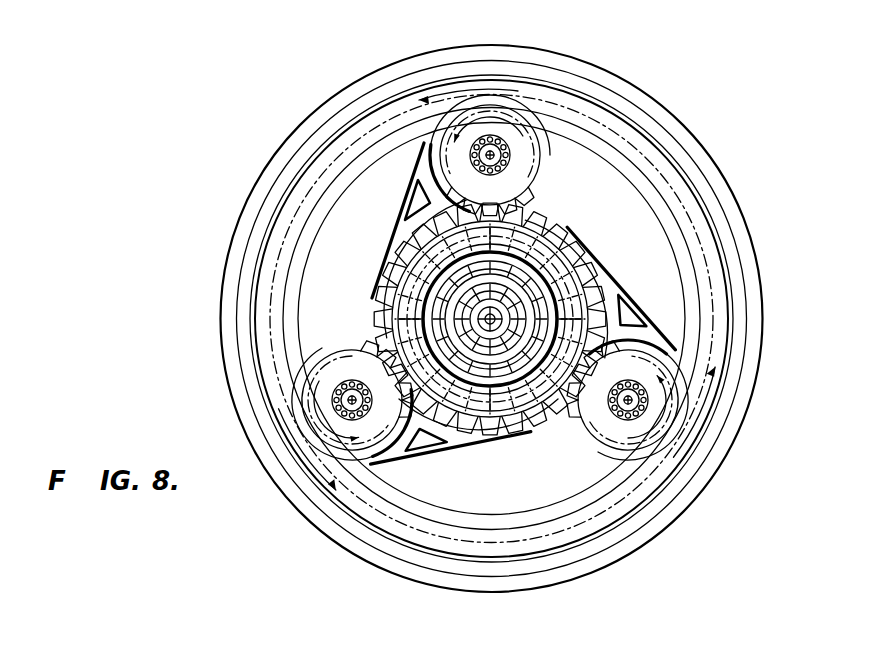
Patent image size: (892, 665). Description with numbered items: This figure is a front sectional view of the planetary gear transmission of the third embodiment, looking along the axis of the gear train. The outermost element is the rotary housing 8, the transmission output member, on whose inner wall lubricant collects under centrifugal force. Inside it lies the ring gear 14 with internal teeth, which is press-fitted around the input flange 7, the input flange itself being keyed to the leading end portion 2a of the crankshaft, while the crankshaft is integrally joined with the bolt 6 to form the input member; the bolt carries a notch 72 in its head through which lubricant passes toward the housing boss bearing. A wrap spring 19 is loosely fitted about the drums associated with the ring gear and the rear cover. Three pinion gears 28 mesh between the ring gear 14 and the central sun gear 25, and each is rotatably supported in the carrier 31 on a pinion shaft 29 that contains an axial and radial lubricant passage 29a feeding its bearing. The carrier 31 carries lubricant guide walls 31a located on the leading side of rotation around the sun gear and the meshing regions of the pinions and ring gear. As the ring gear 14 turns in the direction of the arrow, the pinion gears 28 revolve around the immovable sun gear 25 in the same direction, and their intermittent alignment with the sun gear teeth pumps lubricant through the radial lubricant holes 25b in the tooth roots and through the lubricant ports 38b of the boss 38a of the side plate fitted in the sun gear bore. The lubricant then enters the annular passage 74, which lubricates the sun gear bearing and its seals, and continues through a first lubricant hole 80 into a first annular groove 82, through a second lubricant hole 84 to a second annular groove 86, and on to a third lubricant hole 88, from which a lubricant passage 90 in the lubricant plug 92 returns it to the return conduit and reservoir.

The rotary housing 8 is at (530, 50).
The ring gear 14 is at (600, 100).
The wrap spring 19 is at (632, 114).
The carrier 31 is at (522, 560).
The lubricant guide walls 31a is at (420, 150).
The radial lubricant holes 25b is at (416, 197).
The pinion gears 28 is at (473, 118).
The lubricant ports 38b is at (395, 352).
The first lubricant hole 80 is at (540, 215).
The pinion shaft 29 is at (648, 408).
The lubricant passage 29a is at (640, 458).
The leading end portion of the crankshaft 2a is at (440, 226).
The input flange 7 is at (445, 250).
The third lubricant hole 88 is at (592, 264).
The bolt 6 is at (455, 276).
The lubricant plug 92 is at (455, 300).
The boss 38a is at (566, 242).
The annular passage 74 is at (600, 257).
The second lubricant hole 84 is at (572, 230).
The lubricant passage 90 is at (468, 350).
The sun gear 25 is at (424, 412).
The notch 72 is at (490, 335).
The second annular groove 86 is at (520, 420).
The first annular groove 82 is at (548, 418).